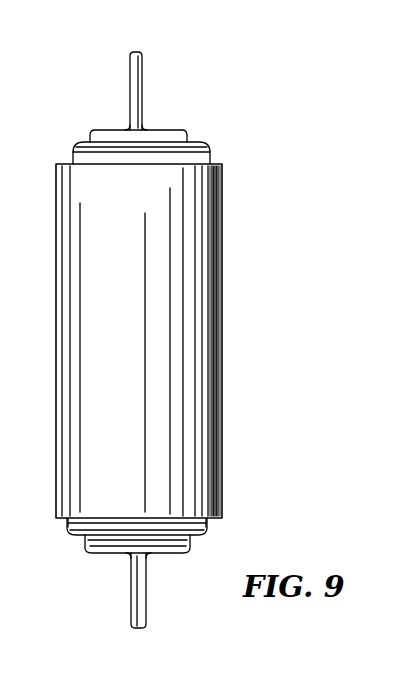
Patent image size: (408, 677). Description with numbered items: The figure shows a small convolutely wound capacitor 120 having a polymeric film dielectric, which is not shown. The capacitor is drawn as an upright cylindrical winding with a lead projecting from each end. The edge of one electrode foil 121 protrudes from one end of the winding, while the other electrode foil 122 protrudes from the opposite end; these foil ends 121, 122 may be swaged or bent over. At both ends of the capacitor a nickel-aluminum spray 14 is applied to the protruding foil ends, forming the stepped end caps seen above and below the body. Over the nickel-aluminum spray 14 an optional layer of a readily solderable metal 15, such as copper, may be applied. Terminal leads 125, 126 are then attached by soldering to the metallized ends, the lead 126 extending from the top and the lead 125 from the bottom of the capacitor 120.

The convolutely wound capacitor 120 is at (165, 340).
The electrode foil 121 is at (120, 157).
The nickel-aluminum spray 14 is at (193, 147).
The readily solderable metal layer 15 is at (165, 143).
The electrode foil 122 is at (113, 523).
The terminal lead 125 is at (146, 593).
The terminal lead 126 is at (131, 98).